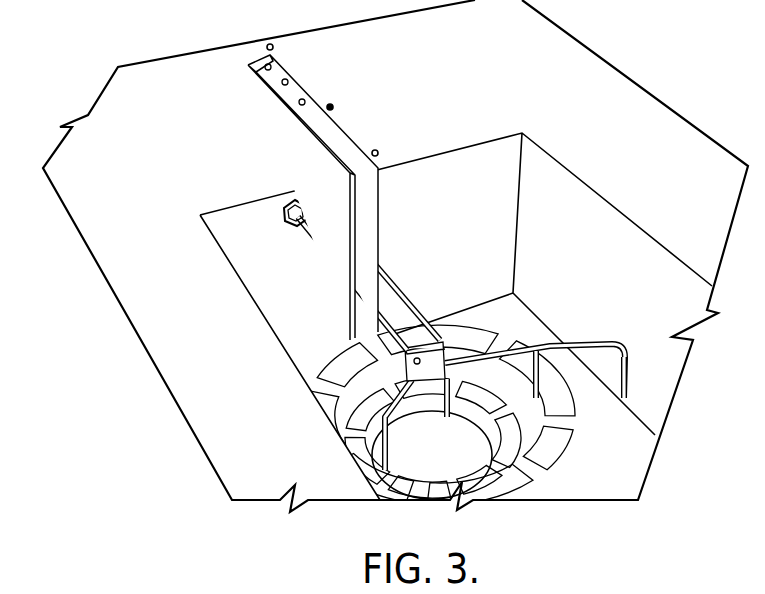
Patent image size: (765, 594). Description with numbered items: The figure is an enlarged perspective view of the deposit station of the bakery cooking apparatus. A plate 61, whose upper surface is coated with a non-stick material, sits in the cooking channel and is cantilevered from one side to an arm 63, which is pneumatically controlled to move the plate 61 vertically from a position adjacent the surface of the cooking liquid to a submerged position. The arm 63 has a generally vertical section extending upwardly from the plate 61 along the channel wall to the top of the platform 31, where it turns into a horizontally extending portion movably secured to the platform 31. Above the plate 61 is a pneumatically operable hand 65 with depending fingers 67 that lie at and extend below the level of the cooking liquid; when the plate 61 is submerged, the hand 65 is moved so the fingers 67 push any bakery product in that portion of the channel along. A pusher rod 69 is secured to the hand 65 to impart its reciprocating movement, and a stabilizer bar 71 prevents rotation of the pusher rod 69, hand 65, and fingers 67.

The platform 31 is at (498, 70).
The plate 61 is at (346, 358).
The arm 63 is at (380, 198).
The pneumatically operable hand 65 is at (447, 338).
The fingers 67 is at (630, 378).
The pusher rod 69 is at (329, 266).
The stabilizer bar 71 is at (402, 286).